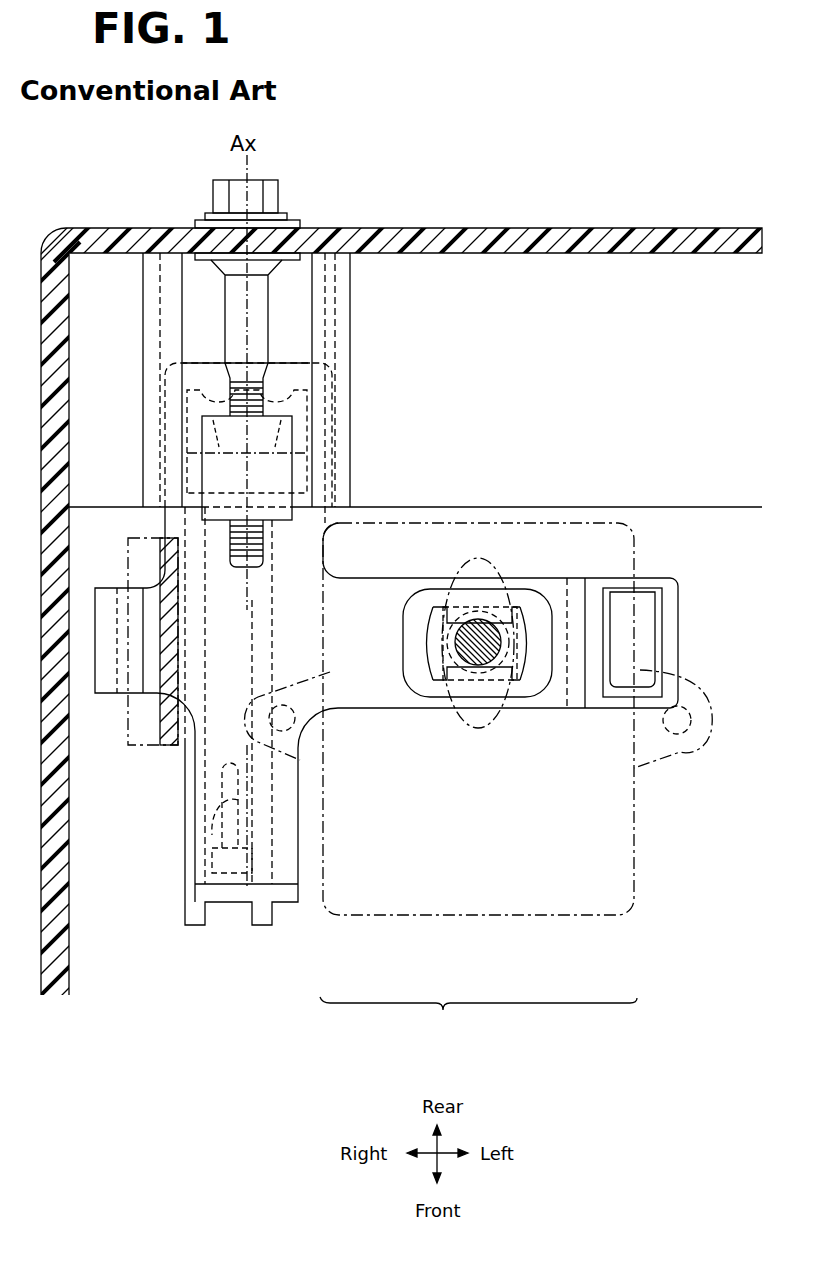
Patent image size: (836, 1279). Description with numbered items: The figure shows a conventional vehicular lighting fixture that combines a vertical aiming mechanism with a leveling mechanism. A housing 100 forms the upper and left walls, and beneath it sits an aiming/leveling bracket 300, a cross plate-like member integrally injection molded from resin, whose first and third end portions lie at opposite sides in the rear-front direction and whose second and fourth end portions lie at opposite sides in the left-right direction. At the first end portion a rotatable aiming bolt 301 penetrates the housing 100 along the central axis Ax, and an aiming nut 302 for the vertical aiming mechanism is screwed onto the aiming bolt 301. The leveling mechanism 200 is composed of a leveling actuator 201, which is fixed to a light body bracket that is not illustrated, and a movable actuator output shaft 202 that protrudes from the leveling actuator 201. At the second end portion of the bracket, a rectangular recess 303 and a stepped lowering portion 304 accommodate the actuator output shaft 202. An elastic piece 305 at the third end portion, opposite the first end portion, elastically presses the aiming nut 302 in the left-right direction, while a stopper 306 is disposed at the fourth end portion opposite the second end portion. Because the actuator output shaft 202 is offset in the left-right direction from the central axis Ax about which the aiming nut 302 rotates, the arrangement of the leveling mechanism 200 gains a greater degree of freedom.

The housing 100 is at (563, 238).
The leveling mechanism 200 is at (473, 1040).
The leveling actuator 201 is at (365, 917).
The actuator output shaft 202 is at (478, 655).
The aiming/leveling bracket 300 is at (218, 903).
The aiming bolt 301 is at (279, 201).
The aiming nut 302 is at (293, 460).
The rectangular recess 303 is at (437, 638).
The stepped lowering portion 304 is at (643, 605).
The elastic piece 305 is at (232, 852).
The stopper 306 is at (103, 695).